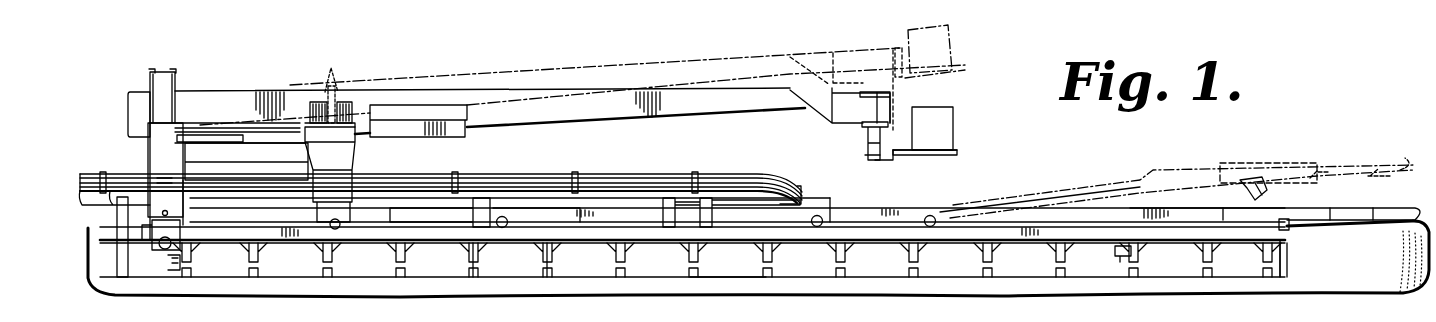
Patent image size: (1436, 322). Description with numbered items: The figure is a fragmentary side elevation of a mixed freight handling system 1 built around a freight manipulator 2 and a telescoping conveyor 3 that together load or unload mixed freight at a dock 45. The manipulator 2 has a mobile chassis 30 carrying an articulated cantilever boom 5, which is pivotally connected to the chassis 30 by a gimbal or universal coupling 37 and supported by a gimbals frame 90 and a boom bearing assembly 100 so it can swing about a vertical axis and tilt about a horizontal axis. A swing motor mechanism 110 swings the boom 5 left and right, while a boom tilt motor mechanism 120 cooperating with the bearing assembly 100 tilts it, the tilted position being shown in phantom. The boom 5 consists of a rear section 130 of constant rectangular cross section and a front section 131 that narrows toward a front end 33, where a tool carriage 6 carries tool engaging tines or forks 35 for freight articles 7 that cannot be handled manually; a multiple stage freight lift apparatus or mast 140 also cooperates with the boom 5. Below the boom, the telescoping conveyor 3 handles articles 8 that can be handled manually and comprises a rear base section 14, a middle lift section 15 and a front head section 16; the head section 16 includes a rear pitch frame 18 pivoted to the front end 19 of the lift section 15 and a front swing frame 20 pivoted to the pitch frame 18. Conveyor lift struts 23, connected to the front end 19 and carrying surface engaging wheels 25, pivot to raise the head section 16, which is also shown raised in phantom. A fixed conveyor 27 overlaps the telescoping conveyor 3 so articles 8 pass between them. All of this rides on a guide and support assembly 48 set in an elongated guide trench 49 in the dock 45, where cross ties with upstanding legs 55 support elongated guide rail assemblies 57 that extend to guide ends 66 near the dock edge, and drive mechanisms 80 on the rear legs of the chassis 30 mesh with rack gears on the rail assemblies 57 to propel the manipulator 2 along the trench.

The mixed freight handling system 1 is at (1058, 131).
The freight manipulator 2 is at (252, 88).
The telescoping conveyor 3 is at (1053, 205).
The cantilever boom 5 is at (582, 62).
The tool carriage 6 is at (903, 134).
The freight articles 7 is at (953, 116).
The articles 8 is at (668, 163).
The rear base section 14 is at (874, 213).
The middle lift section 15 is at (1142, 208).
The front head section 16 is at (1404, 206).
The rear pitch frame 18 is at (1312, 210).
The front end of the lift section 19 is at (1208, 212).
The front swing frame 20 is at (1380, 206).
The conveyor lift struts 23 is at (1259, 176).
The surface engaging wheels 25 is at (1289, 224).
The fixed conveyor 27 is at (468, 196).
The mobile chassis 30 is at (148, 150).
The front end of the boom 33 is at (837, 118).
The tool engaging tines or forks 35 is at (956, 153).
The gimbal or universal coupling 37 is at (183, 108).
The dock 45 is at (1410, 224).
The guide and support assembly 48 is at (462, 262).
The guide trench 49 is at (715, 280).
The legs 55 is at (911, 258).
The guide rail assembly 57 is at (601, 246).
The guide ends 66 is at (1288, 244).
The drive mechanism 80 is at (152, 252).
The gimbals frame 90 is at (150, 76).
The boom bearing assembly 100 is at (351, 101).
The swing motor mechanism 110 is at (263, 150).
The boom tilt motor mechanism 120 is at (319, 101).
The rear section of the boom 130 is at (478, 90).
The front section of the boom 131 is at (690, 106).
The multiple stage freight lift apparatus or mast 140 is at (862, 163).